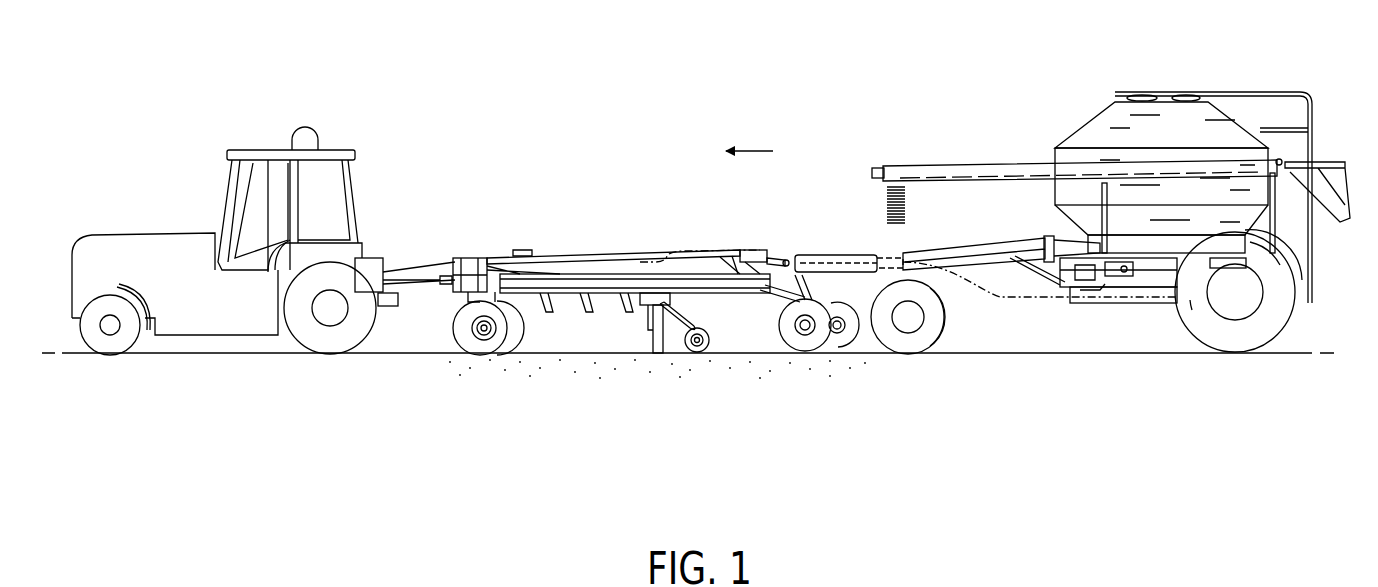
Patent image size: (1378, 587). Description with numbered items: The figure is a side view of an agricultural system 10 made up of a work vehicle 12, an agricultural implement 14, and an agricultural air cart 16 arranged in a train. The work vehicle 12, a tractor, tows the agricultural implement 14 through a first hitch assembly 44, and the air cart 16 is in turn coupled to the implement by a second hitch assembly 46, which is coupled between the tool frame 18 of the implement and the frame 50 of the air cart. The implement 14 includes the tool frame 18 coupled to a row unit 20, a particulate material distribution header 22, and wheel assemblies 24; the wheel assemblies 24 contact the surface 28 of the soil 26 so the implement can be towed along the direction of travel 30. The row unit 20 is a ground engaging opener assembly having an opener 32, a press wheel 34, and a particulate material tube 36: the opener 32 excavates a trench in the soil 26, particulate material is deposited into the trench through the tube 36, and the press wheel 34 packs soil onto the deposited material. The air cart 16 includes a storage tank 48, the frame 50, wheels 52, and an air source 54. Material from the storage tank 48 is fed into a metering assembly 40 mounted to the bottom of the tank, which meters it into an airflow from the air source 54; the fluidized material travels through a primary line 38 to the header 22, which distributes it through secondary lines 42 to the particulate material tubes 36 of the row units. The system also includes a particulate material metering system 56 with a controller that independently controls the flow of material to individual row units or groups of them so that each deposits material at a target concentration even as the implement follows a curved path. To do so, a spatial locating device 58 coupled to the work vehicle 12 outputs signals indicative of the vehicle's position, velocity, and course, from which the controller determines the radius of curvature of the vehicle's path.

The agricultural system 10 is at (718, 78).
The work vehicle 12 is at (272, 118).
The agricultural implement 14 is at (628, 205).
The agricultural air cart 16 is at (1079, 89).
The tool frame 18 is at (649, 270).
The row unit 20 is at (636, 334).
The particulate material distribution header 22 is at (754, 247).
The wheel assemblies 24 is at (478, 356).
The soil 26 is at (915, 468).
The surface 28 is at (1078, 354).
The direction of travel 30 is at (756, 148).
The opener 32 is at (664, 355).
The press wheel 34 is at (716, 355).
The particulate material tube 36 is at (690, 362).
The primary line 38 is at (1018, 312).
The metering assembly 40 is at (1124, 278).
The secondary line 42 is at (704, 252).
The first hitch assembly 44 is at (425, 262).
The second hitch assembly 46 is at (786, 256).
The storage tank 48 is at (1108, 125).
The frame 50 is at (961, 248).
The wheels 52 is at (954, 330).
The air source 54 is at (1288, 243).
The particulate material metering system 56 is at (849, 160).
The spatial locating device 58 is at (304, 127).